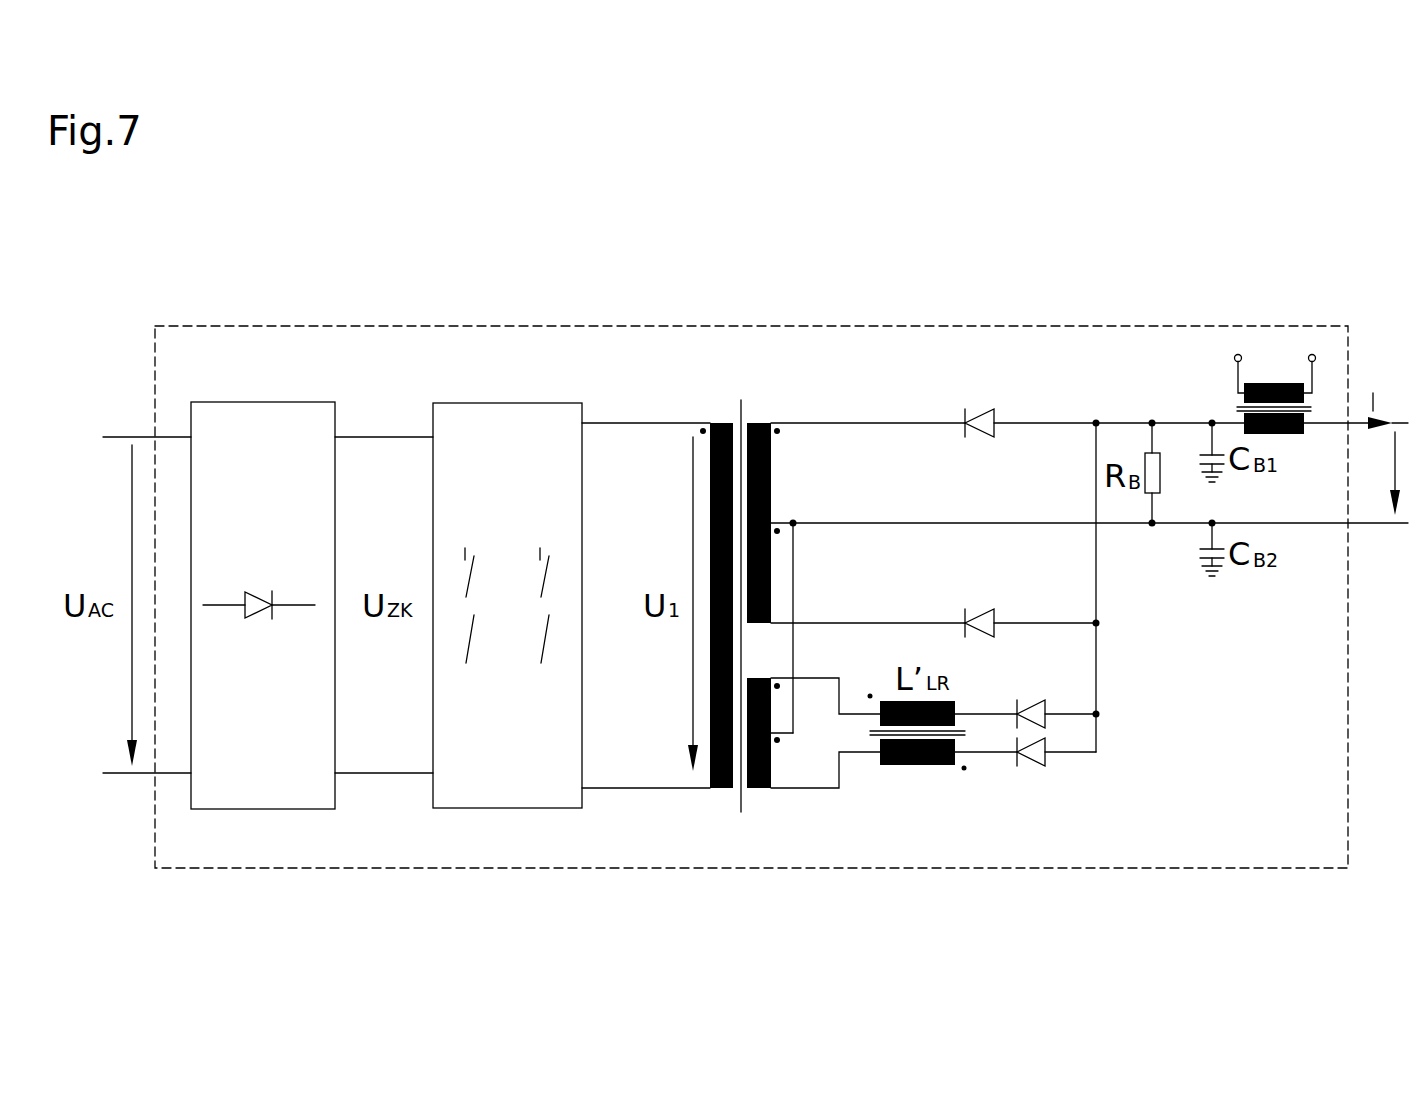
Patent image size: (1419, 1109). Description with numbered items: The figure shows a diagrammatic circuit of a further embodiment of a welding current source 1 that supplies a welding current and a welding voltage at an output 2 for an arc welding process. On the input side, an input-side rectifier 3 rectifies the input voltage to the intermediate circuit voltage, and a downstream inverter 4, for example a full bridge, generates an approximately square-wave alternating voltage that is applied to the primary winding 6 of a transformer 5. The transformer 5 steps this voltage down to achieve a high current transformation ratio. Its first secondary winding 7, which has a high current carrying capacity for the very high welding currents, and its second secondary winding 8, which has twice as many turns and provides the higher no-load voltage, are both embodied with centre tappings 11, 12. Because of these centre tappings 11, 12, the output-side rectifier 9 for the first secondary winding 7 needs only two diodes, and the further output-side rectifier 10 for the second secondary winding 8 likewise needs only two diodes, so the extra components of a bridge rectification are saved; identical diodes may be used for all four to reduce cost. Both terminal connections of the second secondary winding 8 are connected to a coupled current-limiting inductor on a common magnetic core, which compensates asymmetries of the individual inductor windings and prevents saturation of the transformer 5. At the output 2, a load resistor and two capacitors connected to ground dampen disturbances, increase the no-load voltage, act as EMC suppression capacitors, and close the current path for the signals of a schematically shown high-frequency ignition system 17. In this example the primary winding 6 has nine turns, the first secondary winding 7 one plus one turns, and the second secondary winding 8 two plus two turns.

The welding current source 1 is at (410, 292).
The output 2 is at (1362, 500).
The input-side rectifier 3 is at (245, 402).
The inverter 4 is at (473, 403).
The transformer 5 is at (745, 378).
The primary winding 6 is at (722, 423).
The first secondary winding 7 is at (762, 423).
The second secondary winding 8 is at (758, 790).
The output-side rectifier 9 is at (1015, 538).
The further output-side rectifier 10 is at (1072, 738).
The centre tapping 11 is at (775, 520).
The centre tapping 12 is at (781, 743).
The high-frequency ignition system 17 is at (1284, 350).